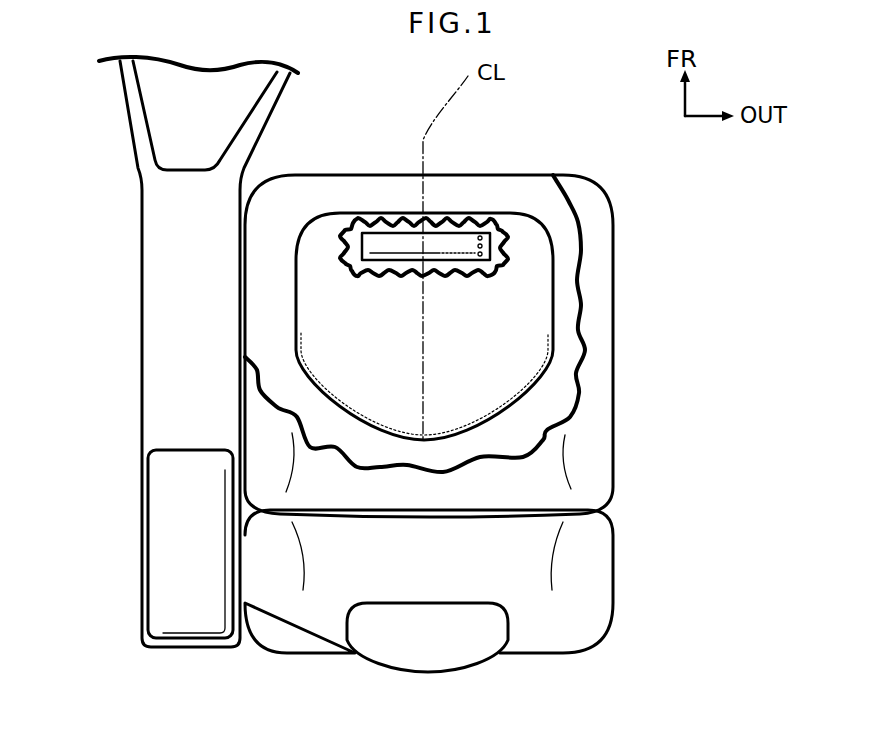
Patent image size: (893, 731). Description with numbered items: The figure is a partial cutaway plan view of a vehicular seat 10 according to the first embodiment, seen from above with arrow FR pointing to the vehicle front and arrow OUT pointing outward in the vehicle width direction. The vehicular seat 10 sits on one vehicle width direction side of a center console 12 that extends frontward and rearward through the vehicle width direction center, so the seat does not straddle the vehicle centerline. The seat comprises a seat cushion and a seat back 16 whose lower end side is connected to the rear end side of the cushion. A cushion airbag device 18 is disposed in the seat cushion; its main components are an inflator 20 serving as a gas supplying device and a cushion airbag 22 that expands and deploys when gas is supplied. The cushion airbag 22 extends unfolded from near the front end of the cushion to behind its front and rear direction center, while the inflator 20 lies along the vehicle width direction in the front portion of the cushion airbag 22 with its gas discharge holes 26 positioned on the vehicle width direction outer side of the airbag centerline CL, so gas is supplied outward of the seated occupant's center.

The vehicular seat 10 is at (482, 377).
The center console 12 is at (160, 322).
The seat back 16 is at (590, 567).
The cushion airbag device 18 is at (466, 300).
The inflator 20 is at (423, 206).
The cushion airbag 22 is at (525, 330).
The gas discharge holes 26 is at (477, 243).